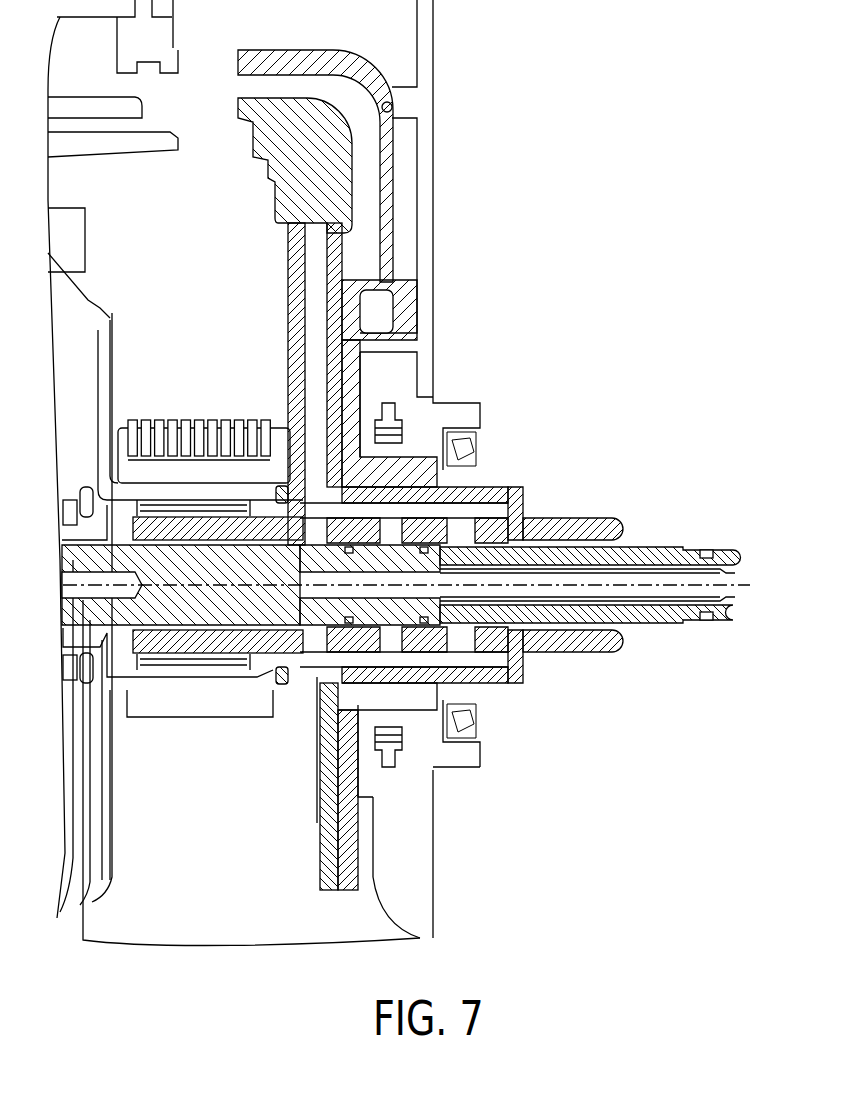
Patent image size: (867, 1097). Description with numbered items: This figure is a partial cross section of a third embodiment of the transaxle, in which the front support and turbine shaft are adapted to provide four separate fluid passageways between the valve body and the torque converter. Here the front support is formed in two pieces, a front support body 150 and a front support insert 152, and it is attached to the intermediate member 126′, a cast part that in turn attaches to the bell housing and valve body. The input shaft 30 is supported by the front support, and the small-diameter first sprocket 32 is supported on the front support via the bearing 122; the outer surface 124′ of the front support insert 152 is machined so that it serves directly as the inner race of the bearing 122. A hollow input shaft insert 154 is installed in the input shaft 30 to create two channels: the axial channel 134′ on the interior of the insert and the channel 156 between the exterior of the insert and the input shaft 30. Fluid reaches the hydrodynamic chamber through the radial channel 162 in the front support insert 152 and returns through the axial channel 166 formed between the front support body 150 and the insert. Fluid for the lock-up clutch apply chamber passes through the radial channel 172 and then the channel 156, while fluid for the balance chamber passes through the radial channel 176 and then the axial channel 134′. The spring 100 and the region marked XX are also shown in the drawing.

The intermediate member 126′ is at (278, 173).
The bearing 122 is at (205, 514).
The spring 100 is at (232, 418).
The radial channel 176 is at (317, 530).
The detail region XX is at (370, 510).
The axial channel 166 is at (502, 488).
The axial channel 134′ is at (540, 565).
The channel 156 is at (592, 553).
The input shaft 30 is at (657, 547).
The radial channel 162 is at (460, 523).
The input shaft insert 154 is at (615, 600).
The front support insert 152 is at (467, 684).
The front support body 150 is at (317, 765).
The outer surface 124′ is at (182, 645).
The first sprocket 32 is at (195, 712).
The radial channel 172 is at (388, 523).